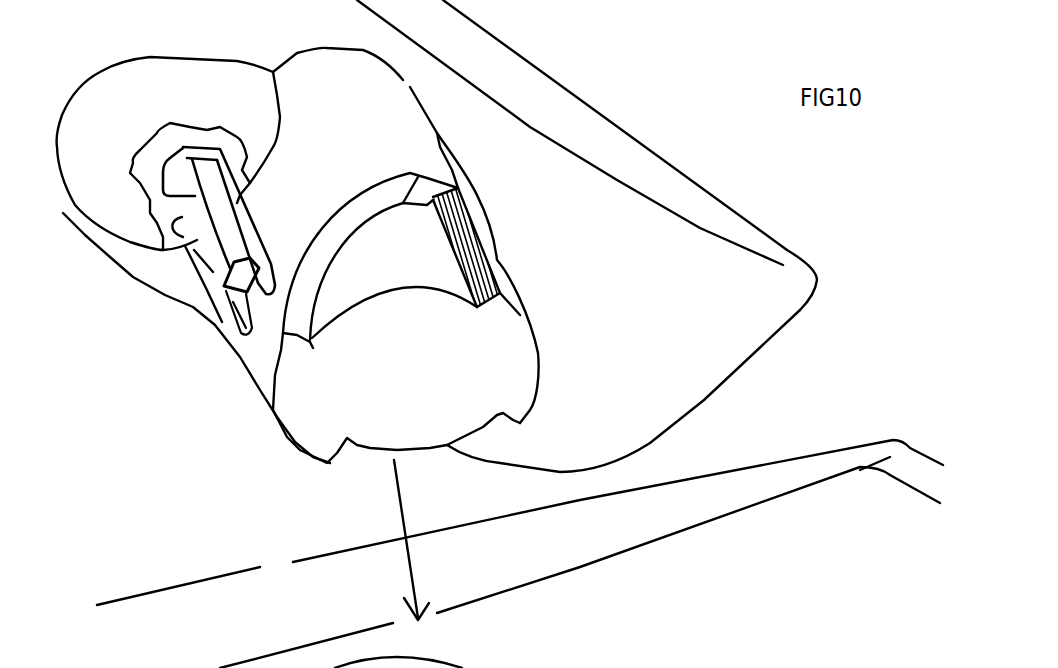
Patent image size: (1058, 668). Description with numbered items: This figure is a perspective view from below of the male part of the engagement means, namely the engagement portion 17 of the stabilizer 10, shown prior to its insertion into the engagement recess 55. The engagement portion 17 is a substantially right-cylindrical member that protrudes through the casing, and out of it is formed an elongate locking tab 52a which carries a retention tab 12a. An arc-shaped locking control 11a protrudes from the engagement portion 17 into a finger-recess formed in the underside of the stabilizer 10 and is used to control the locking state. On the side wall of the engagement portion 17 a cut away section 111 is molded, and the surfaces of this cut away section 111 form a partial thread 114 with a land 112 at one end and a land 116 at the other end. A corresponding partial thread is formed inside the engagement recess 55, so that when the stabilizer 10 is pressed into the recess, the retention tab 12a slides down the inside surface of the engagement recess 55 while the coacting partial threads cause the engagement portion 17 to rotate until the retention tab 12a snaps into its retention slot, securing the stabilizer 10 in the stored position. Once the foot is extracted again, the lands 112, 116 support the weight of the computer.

The stabilizer 10 is at (792, 233).
The engagement portion 17 is at (541, 350).
The locking control 11a is at (182, 165).
The locking tab 52a is at (220, 230).
The retention tab 12a is at (224, 287).
The partial thread 114 is at (335, 220).
The land 112 is at (431, 190).
The cut away section 111 is at (377, 280).
The land 116 is at (290, 350).
The engagement recess 55 is at (548, 667).